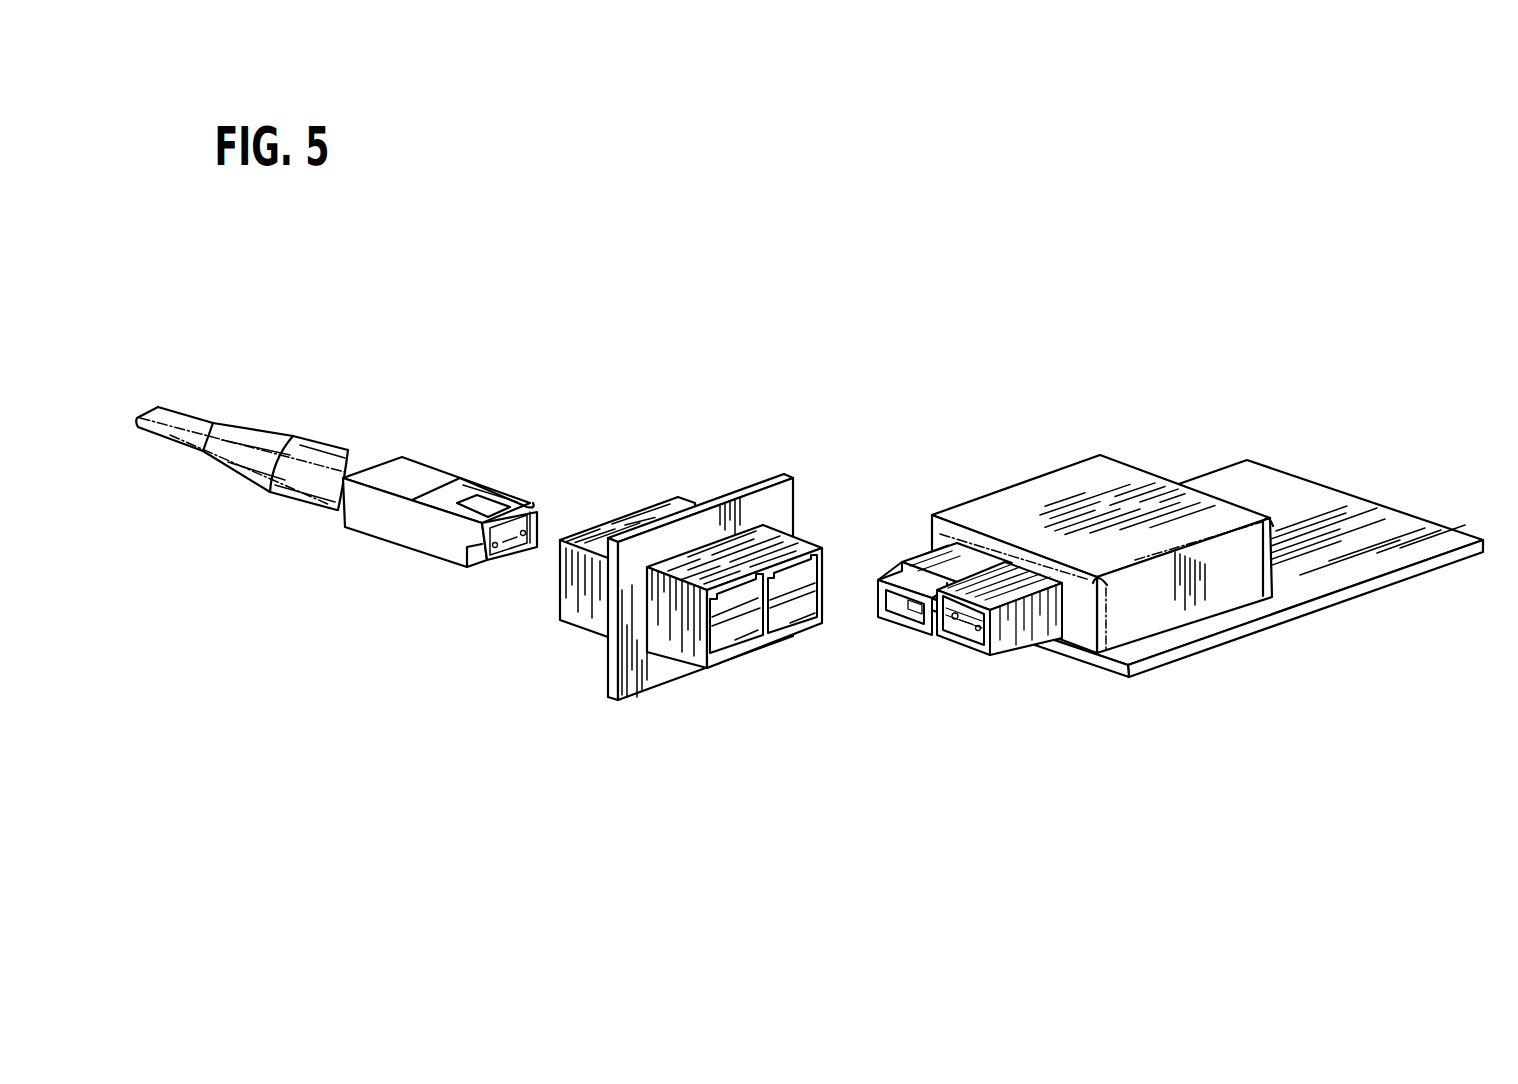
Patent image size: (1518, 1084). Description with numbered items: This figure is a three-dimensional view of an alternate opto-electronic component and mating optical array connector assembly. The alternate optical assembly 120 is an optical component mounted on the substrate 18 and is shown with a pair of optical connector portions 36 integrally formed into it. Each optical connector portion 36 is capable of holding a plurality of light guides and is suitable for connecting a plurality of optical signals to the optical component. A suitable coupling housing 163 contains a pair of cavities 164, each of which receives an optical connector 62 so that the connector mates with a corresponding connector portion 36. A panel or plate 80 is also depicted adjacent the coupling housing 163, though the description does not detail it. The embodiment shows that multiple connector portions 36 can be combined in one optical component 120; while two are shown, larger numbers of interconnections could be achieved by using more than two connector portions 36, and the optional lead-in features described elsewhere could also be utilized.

The substrate 18 is at (1312, 475).
The optical connector portion 36 is at (903, 556).
The optical connector 62 is at (433, 460).
The panel / bezel plate 80 is at (735, 483).
The optical assembly 120 is at (1063, 463).
The coupling housing 163 is at (808, 532).
The cavity 164 is at (733, 641).